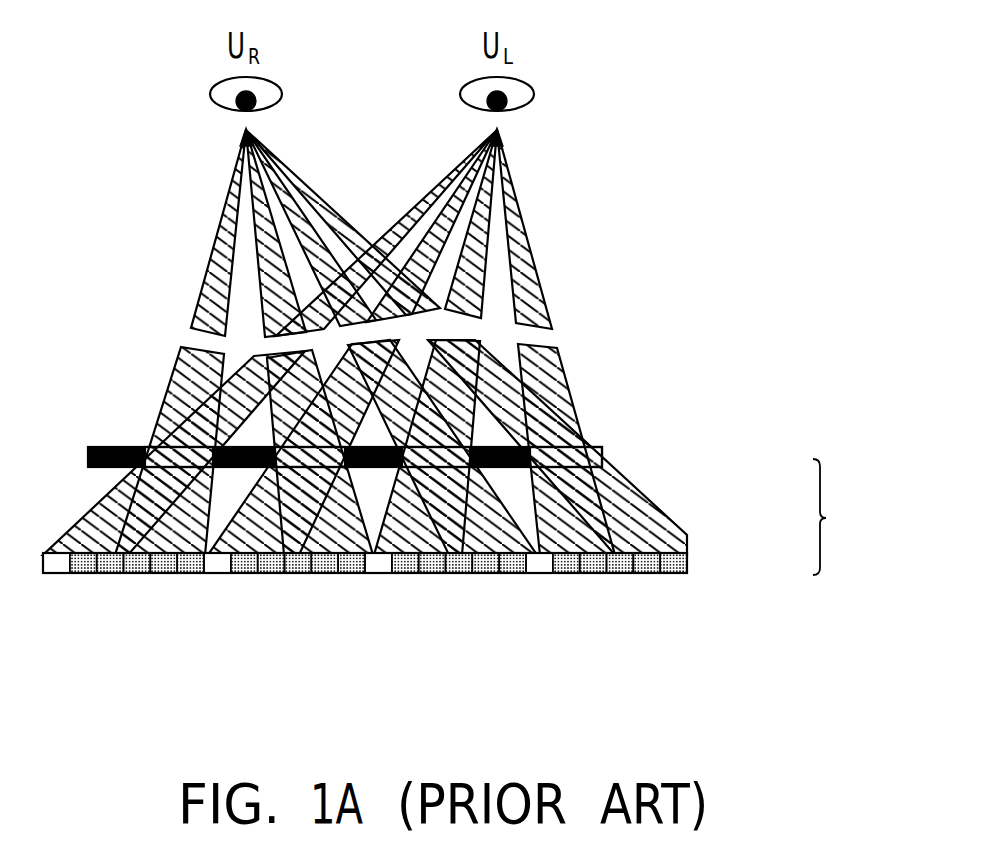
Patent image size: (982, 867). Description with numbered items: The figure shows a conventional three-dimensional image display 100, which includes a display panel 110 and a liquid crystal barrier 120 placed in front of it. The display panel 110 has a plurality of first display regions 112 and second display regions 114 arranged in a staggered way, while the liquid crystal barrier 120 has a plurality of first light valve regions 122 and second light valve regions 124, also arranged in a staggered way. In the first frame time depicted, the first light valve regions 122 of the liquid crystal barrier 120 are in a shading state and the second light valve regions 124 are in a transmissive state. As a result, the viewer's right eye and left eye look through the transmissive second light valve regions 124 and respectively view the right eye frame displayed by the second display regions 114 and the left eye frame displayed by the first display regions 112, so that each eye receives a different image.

The three-dimensional image display 100 is at (844, 517).
The display panel 110 is at (420, 619).
The first display region 112 is at (288, 577).
The second display region 114 is at (368, 577).
The liquid crystal barrier 120 is at (444, 384).
The first light valve region 122 is at (507, 446).
The second light valve region 124 is at (577, 446).